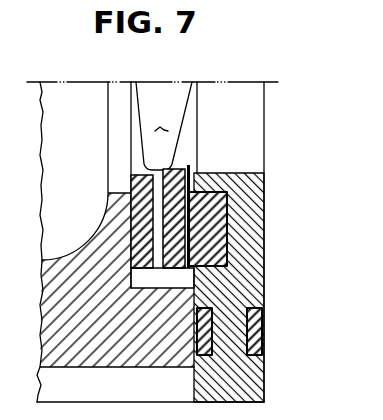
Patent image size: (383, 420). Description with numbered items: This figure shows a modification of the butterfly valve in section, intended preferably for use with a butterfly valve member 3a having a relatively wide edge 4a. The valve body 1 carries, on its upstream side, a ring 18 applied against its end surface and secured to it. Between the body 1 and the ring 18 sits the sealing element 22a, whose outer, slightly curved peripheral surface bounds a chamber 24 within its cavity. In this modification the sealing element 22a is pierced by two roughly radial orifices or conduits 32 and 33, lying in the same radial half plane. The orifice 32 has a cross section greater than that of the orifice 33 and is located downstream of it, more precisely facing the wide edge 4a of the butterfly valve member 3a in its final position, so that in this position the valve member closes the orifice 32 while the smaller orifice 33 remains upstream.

The body 1 is at (110, 330).
The butterfly valve member 3a is at (147, 112).
The edge 4a is at (143, 172).
The ring 18 is at (247, 393).
The sealing element 22a is at (227, 232).
The chamber 24 is at (163, 273).
The orifice 32 is at (131, 253).
The orifice 33 is at (189, 165).